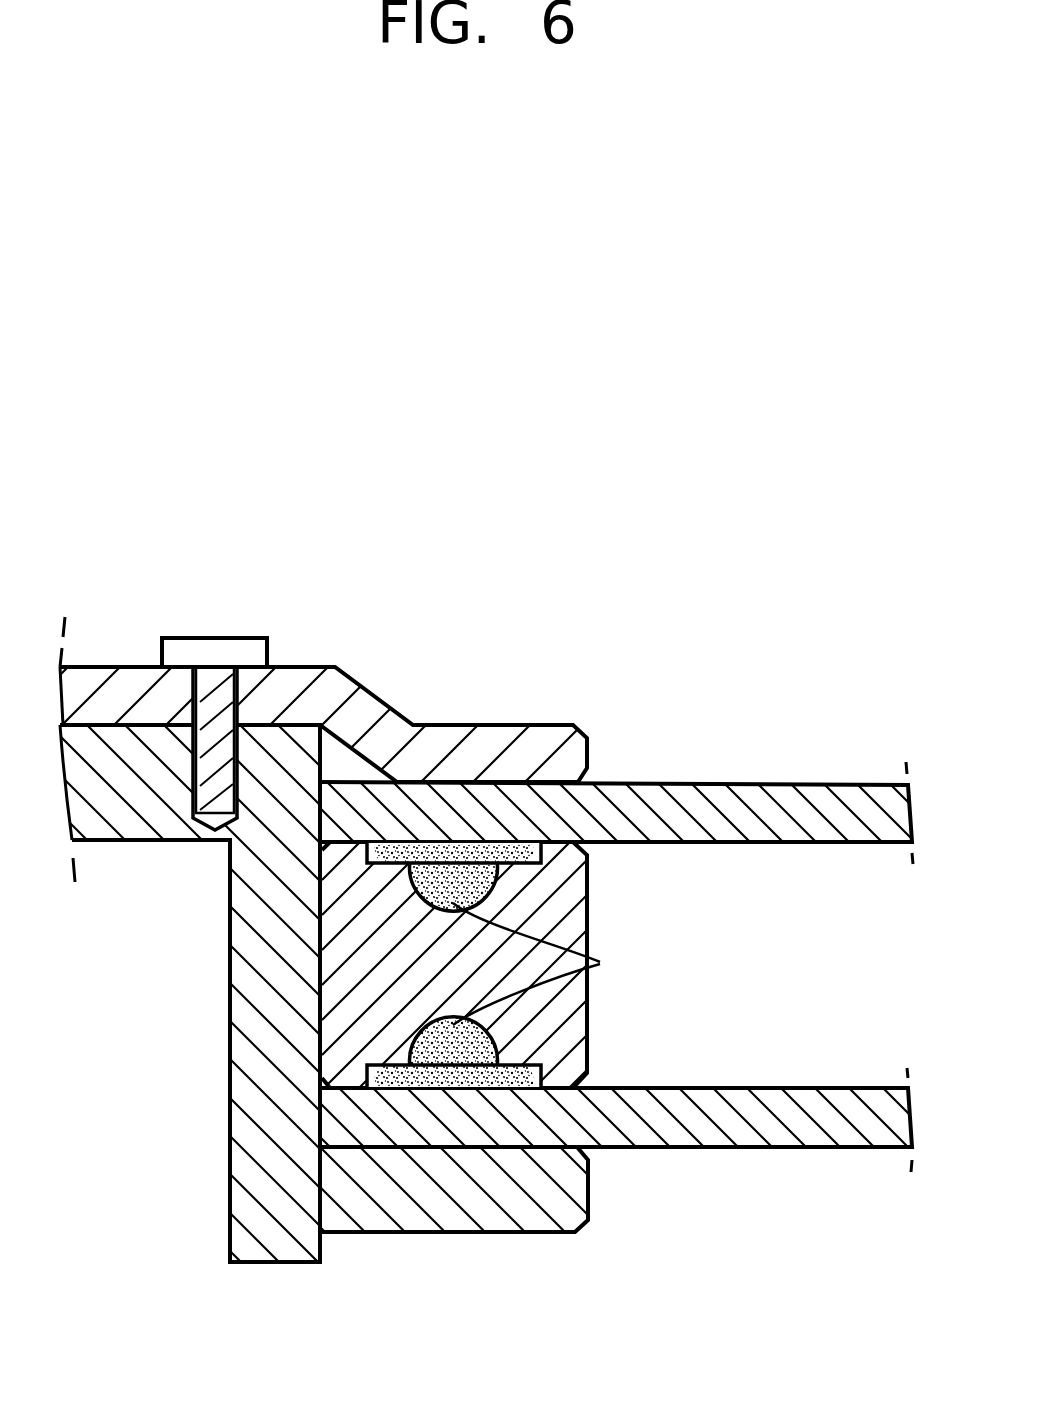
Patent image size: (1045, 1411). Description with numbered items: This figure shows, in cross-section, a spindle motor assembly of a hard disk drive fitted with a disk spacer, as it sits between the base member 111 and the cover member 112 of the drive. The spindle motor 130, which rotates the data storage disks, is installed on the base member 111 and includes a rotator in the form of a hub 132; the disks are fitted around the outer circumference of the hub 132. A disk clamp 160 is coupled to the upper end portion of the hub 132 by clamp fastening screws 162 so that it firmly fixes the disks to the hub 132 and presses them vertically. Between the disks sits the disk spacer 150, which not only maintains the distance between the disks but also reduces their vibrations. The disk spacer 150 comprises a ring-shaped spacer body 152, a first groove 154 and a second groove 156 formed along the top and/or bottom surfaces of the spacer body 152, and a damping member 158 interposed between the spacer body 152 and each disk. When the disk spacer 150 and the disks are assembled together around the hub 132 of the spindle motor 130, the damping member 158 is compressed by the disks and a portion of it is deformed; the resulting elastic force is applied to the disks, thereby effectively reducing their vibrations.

The base member 111 is at (778, 1122).
The cover member 112 is at (778, 812).
The spindle motor 130 is at (322, 895).
The hub 132 is at (267, 1007).
The disk spacer 150 is at (559, 981).
The spacer body 152 is at (590, 1042).
The first groove 154 is at (567, 964).
The second groove 156 is at (380, 840).
The damping member 158 is at (448, 850).
The disk clamp 160 is at (337, 677).
The clamp fastening screw 162 is at (213, 653).